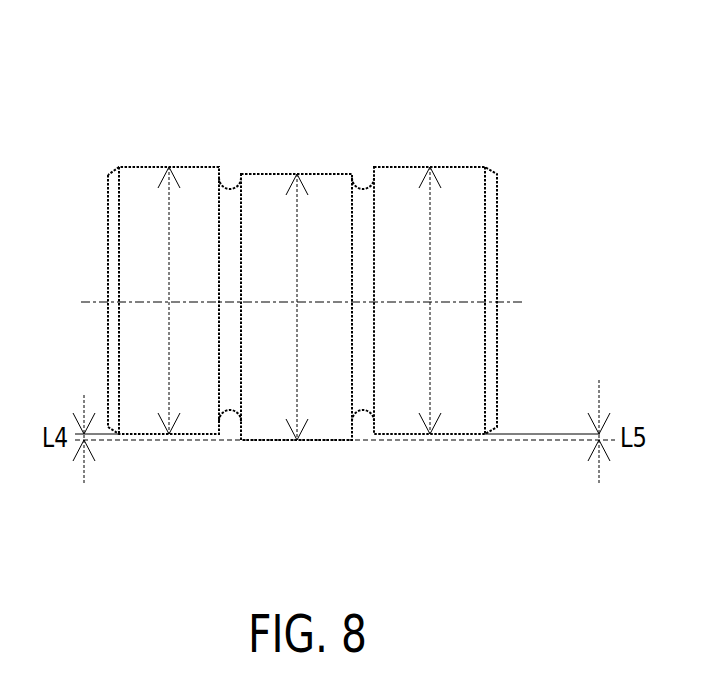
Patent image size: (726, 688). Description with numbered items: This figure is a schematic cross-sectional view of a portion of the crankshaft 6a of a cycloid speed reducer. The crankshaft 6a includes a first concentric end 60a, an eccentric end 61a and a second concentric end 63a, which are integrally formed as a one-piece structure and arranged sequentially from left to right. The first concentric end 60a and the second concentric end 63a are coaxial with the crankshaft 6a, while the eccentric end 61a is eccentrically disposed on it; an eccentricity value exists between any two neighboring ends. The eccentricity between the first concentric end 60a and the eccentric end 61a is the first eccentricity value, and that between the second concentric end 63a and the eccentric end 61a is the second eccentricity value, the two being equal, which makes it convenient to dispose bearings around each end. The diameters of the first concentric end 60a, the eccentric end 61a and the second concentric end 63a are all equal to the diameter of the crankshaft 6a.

The crankshaft 6a is at (702, 50).
The first concentric end 60a is at (143, 190).
The eccentric end 61a is at (273, 195).
The second concentric end 63a is at (407, 190).